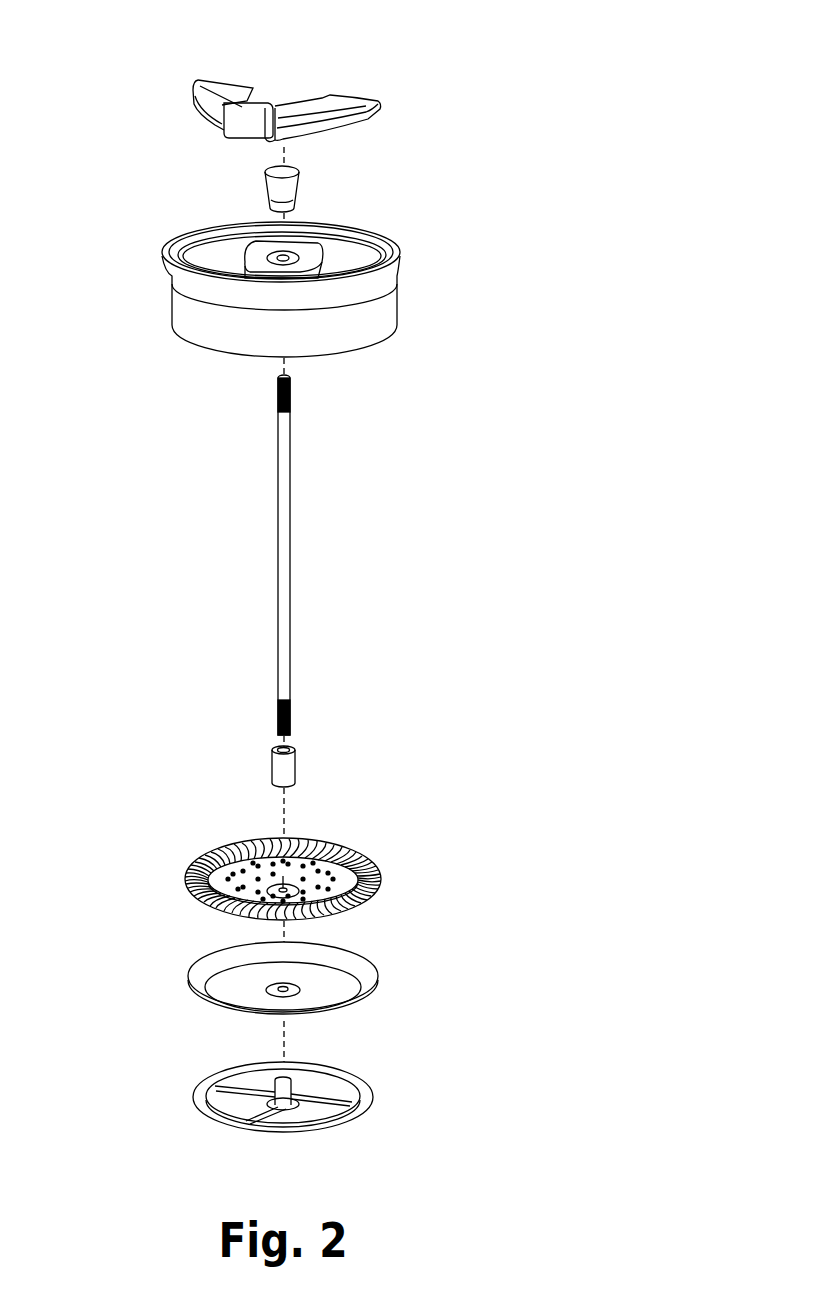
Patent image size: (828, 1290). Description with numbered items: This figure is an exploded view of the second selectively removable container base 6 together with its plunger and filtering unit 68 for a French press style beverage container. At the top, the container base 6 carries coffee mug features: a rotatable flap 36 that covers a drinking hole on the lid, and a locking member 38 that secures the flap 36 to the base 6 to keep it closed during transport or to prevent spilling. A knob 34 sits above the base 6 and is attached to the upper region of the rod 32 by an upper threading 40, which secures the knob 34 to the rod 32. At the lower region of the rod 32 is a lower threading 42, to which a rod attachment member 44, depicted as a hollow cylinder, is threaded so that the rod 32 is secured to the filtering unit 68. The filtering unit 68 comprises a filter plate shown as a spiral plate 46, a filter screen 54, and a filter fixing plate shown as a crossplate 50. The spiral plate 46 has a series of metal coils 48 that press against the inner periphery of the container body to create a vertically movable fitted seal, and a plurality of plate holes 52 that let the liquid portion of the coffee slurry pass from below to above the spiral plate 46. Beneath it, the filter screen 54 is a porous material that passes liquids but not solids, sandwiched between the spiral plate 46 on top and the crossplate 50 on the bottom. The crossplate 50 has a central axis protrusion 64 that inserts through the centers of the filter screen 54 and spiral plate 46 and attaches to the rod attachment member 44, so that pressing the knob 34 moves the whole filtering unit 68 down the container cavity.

The second selectively removable container base 6 is at (131, 288).
The rod 32 is at (290, 553).
The knob 34 is at (299, 185).
The rotatable flap 36 is at (373, 106).
The locking member 38 is at (195, 88).
The upper threading 40 is at (290, 393).
The lower threading 42 is at (290, 718).
The rod attachment member 44 is at (295, 765).
The spiral plate 46 is at (309, 860).
The metal coils 48 is at (401, 863).
The crossplate 50 is at (281, 1094).
The plate holes 52 is at (230, 862).
The filter screen 54 is at (378, 982).
The central axis protrusion 64 is at (270, 1095).
The filtering unit 68 is at (253, 1030).